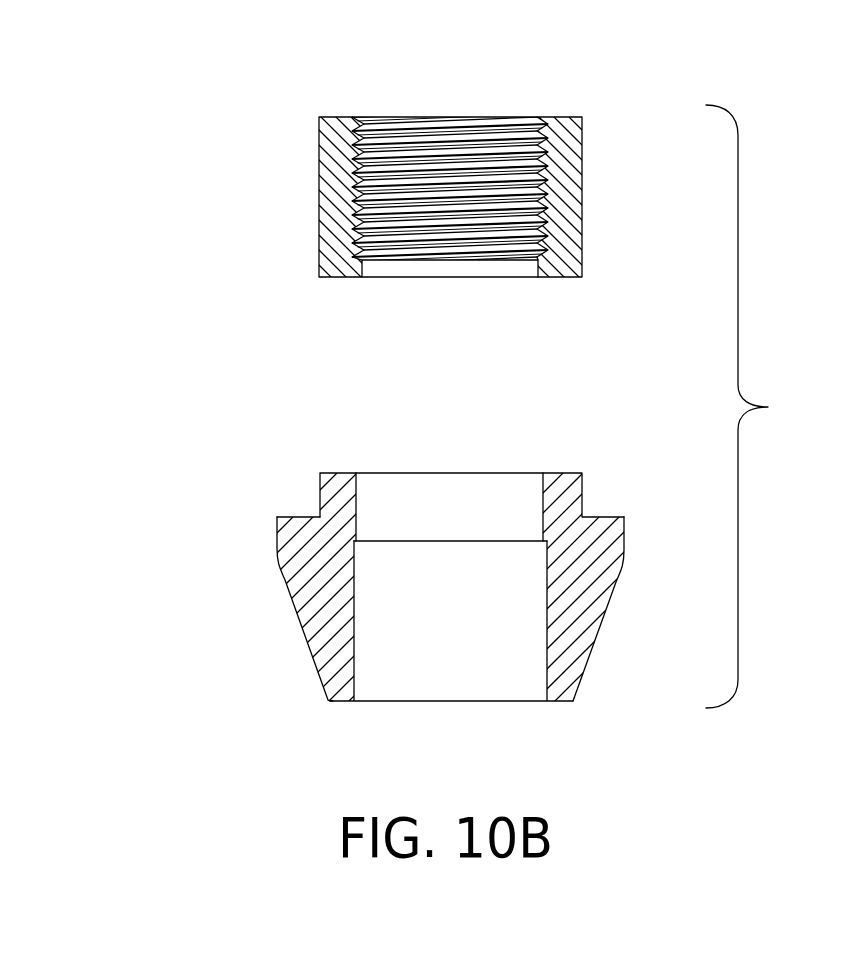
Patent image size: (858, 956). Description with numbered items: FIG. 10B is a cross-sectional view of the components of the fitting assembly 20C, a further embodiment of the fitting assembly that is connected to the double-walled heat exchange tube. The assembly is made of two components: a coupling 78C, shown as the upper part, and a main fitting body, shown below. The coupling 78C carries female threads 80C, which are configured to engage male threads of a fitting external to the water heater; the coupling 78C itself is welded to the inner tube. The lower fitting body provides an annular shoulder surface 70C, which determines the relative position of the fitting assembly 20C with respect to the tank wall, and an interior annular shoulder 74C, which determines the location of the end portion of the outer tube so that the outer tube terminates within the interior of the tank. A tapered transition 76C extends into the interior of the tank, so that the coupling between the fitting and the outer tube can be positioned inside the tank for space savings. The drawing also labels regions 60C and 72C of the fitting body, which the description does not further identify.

The fitting assembly 20C is at (770, 406).
The coupling 78C is at (335, 147).
The female threads 80C is at (378, 135).
The annular shoulder surface 70C is at (300, 515).
The upper bore 60C is at (358, 510).
The interior annular shoulder 74C is at (547, 541).
The tapered transition 76C is at (303, 627).
The lower bore 72C is at (355, 652).